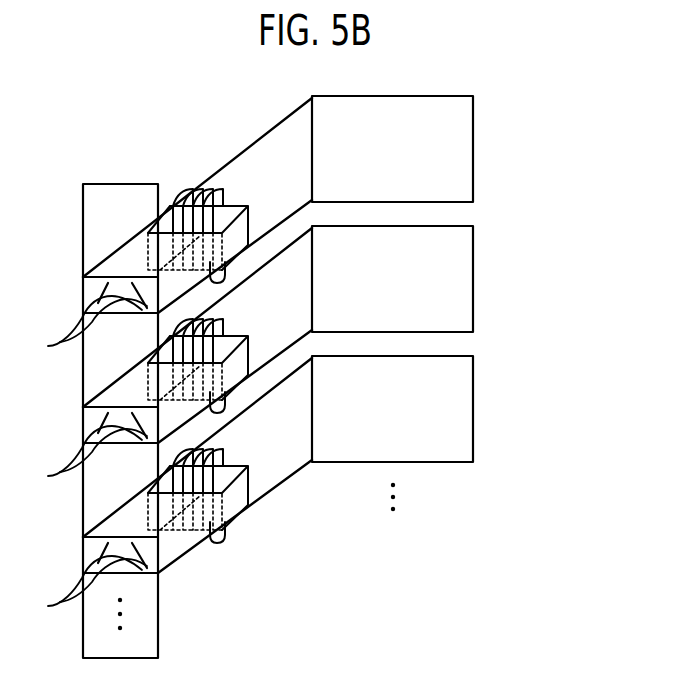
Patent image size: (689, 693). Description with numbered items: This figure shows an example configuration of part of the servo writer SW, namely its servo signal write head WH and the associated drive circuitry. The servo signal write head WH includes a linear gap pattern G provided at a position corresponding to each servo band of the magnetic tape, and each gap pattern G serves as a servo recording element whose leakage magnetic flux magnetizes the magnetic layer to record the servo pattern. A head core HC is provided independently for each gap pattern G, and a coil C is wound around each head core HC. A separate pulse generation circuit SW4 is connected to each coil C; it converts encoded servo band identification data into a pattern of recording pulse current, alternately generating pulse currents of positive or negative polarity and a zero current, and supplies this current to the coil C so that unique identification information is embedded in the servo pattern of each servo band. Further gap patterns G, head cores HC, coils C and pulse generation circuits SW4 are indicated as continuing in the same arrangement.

The servo writer SW is at (93, 180).
The servo signal write head WH is at (123, 197).
The head core HC is at (113, 243).
The coil C is at (203, 163).
The gap pattern G is at (87, 454).
The pulse generation circuit SW4 is at (473, 144).